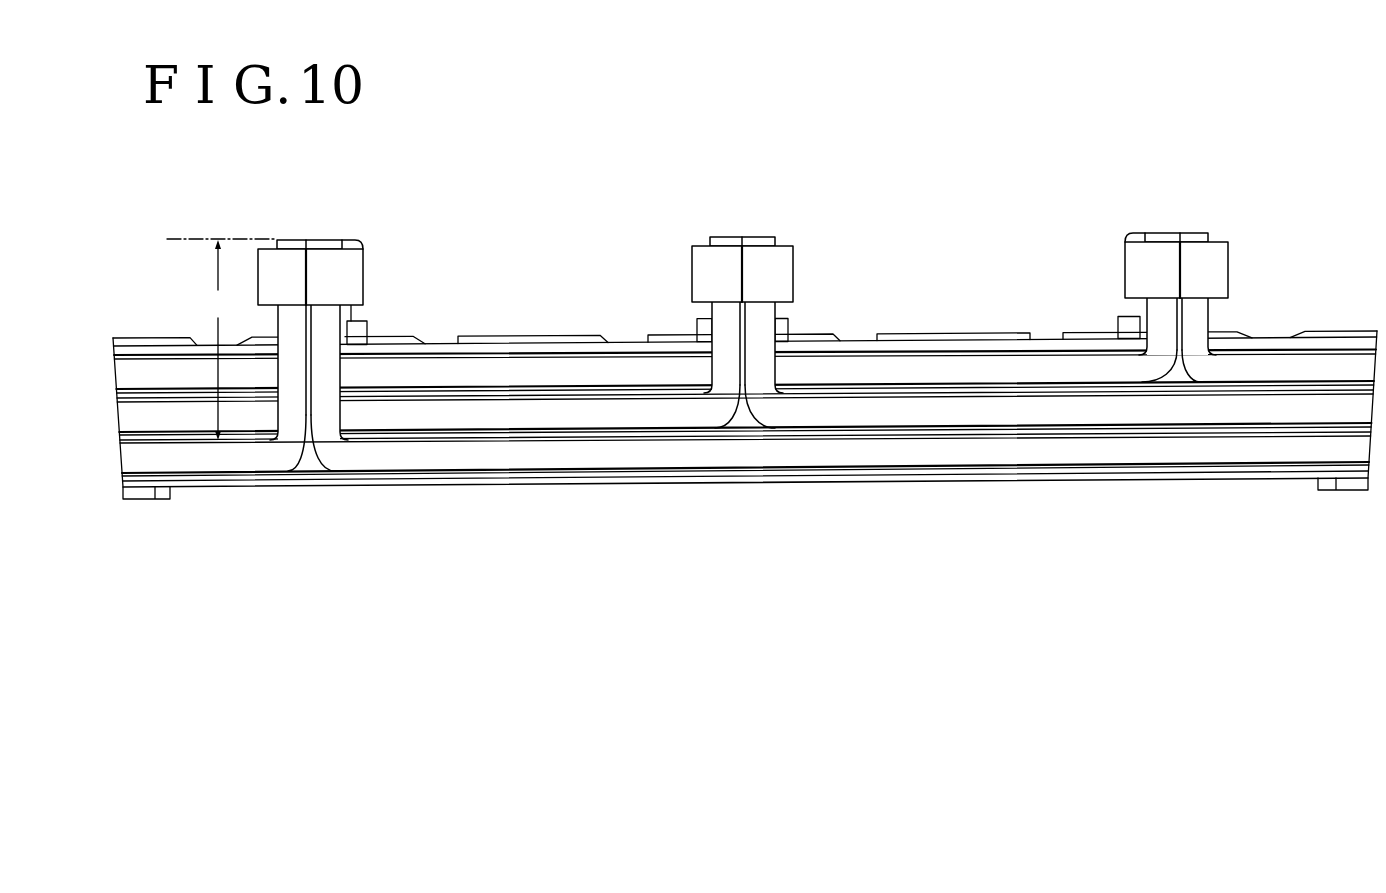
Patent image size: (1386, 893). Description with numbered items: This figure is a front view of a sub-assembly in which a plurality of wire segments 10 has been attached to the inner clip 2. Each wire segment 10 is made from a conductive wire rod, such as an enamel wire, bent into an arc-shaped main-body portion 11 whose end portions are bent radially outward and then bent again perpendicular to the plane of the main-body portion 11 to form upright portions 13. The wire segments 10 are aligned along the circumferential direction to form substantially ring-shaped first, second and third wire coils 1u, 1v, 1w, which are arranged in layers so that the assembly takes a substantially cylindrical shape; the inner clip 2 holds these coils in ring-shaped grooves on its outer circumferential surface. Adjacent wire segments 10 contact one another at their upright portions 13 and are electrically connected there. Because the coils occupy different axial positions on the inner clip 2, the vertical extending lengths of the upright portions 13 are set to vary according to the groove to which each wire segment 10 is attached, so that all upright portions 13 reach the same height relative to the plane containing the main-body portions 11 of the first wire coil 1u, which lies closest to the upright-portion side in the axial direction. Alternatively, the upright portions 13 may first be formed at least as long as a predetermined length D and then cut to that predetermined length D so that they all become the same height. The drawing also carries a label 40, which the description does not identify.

The upright portion 13 is at (300, 239).
The connector 40 is at (687, 277).
The wire segment 10 is at (856, 366).
The inner clip 2 is at (945, 328).
The main-body portion 11 is at (1052, 370).
The first wire coil 1u is at (110, 381).
The second wire coil 1v is at (108, 417).
The third wire coil 1w is at (116, 463).
The predetermined length D is at (222, 339).